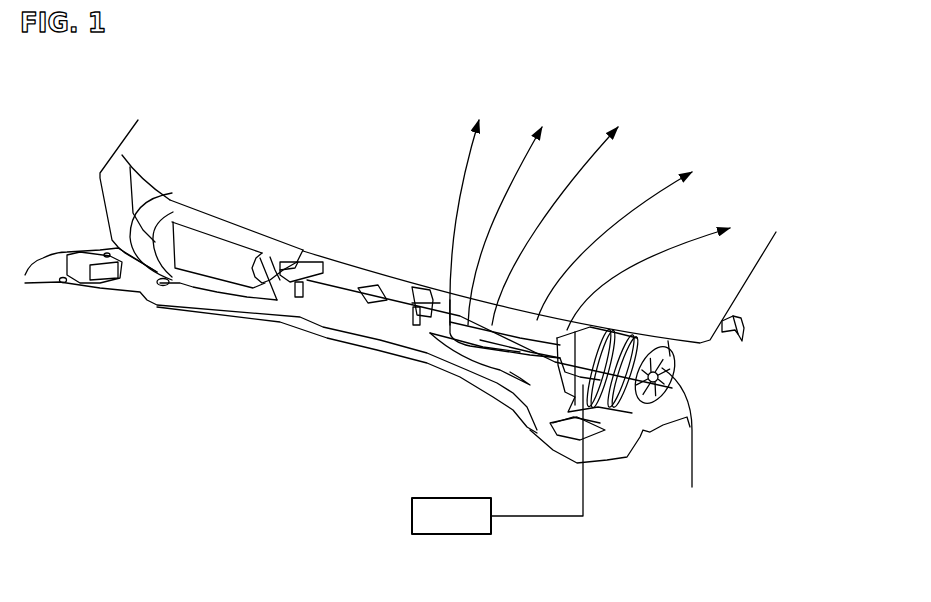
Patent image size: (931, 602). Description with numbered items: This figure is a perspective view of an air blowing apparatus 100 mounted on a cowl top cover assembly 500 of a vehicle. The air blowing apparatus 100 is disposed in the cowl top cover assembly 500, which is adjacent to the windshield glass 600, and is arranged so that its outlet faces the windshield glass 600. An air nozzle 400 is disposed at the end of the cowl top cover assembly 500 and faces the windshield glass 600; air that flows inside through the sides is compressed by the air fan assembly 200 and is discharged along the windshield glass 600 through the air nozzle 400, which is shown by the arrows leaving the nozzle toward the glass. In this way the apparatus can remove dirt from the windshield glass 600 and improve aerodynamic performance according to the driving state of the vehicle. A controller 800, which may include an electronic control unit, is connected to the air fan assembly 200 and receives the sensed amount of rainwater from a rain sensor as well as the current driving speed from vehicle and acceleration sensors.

The air blowing apparatus 100 is at (373, 100).
The air fan assembly 200 is at (690, 367).
The air nozzle 400 is at (440, 302).
The cowl top cover assembly 500 is at (43, 272).
The windshield glass 600 is at (743, 263).
The controller 800 is at (412, 516).